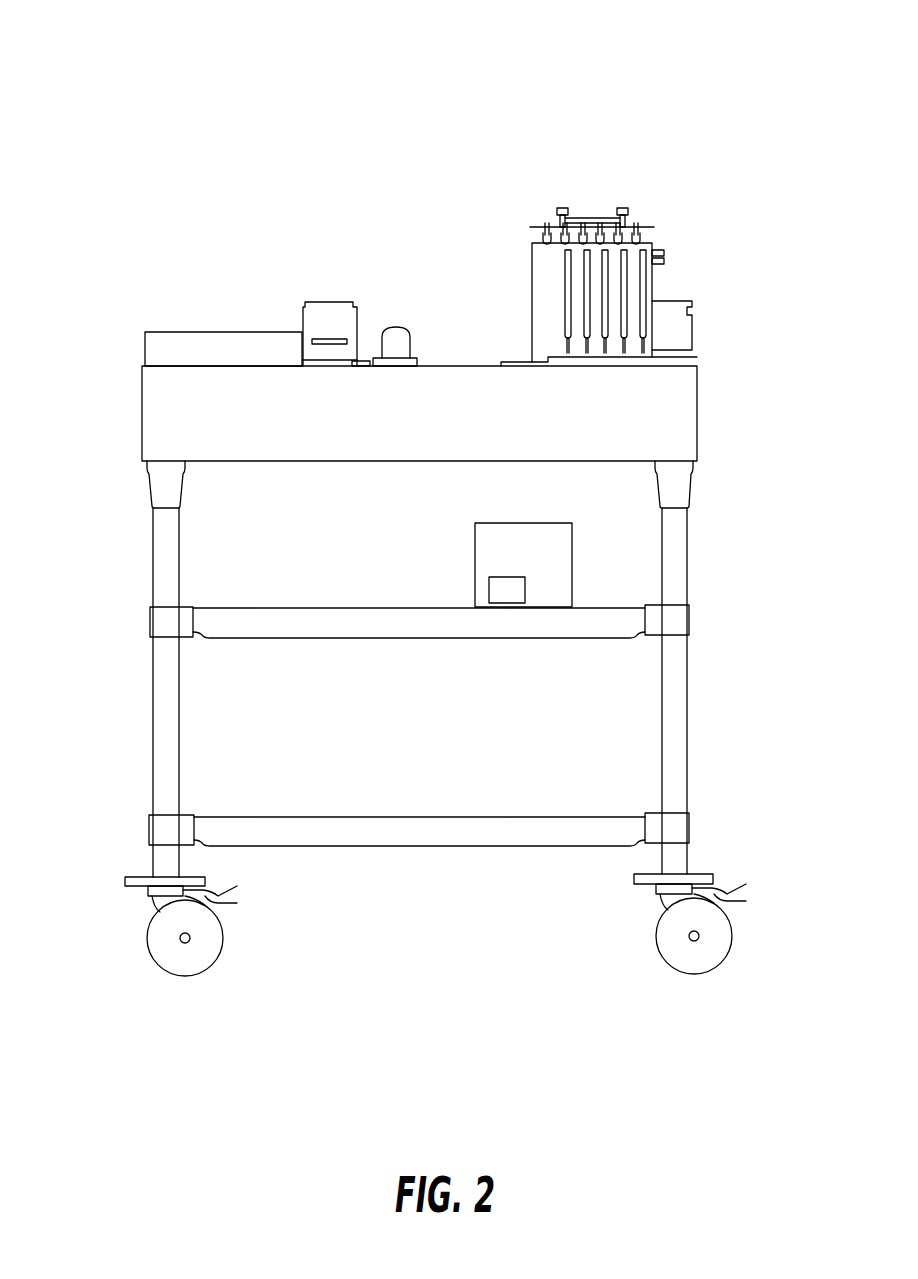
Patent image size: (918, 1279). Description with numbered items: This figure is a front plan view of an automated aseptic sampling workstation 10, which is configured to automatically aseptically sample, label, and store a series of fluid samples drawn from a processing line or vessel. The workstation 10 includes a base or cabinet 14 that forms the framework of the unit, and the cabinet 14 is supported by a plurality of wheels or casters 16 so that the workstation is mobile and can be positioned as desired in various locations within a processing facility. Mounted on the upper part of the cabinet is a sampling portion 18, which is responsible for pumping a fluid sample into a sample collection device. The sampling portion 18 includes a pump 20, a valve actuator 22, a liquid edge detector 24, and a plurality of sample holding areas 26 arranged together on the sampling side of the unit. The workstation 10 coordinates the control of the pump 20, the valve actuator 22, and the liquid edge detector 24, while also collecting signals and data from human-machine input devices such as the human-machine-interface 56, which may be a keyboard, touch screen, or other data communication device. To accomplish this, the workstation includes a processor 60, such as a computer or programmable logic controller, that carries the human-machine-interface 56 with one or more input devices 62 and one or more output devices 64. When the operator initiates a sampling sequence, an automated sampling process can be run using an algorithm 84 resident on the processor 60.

The workstation 10 is at (138, 300).
The base or cabinet 14 is at (697, 444).
The wheels or casters 16 is at (732, 918).
The sampling portion 18 is at (520, 112).
The pump 20 is at (693, 300).
The valve actuator 22 is at (532, 242).
The liquid edge detector 24 is at (663, 241).
The sample holding areas 26 is at (568, 350).
The human-machine-interface 56 is at (208, 330).
The processor 60 is at (572, 545).
The input devices 62 is at (397, 327).
The output devices 64 is at (328, 303).
The algorithm 84 is at (507, 603).